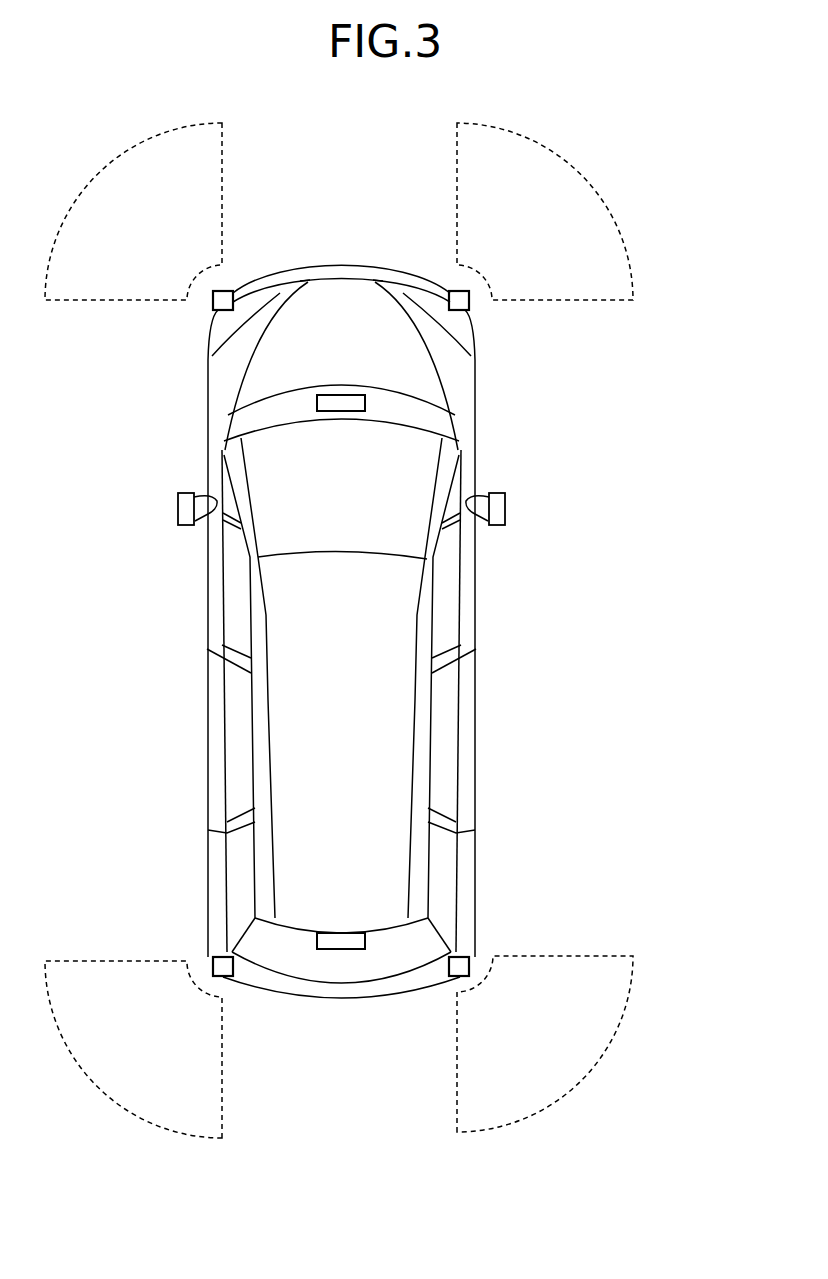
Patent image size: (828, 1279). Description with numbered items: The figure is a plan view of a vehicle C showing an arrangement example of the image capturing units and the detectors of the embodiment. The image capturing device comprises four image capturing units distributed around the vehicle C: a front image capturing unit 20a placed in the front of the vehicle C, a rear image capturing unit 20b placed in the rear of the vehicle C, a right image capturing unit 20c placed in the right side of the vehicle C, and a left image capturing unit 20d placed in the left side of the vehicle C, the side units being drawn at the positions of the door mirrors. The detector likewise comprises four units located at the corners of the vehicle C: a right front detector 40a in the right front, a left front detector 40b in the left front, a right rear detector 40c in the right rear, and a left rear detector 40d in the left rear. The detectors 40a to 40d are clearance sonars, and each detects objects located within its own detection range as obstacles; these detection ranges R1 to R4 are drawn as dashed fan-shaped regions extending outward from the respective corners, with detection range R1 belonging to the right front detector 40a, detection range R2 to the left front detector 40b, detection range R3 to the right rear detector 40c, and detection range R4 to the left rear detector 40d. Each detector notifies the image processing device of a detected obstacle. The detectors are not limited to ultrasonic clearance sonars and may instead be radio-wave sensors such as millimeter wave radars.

The vehicle C is at (478, 670).
The front image capturing unit 20a is at (365, 403).
The rear image capturing unit 20b is at (365, 940).
The right image capturing unit 20c is at (505, 506).
The left image capturing unit 20d is at (178, 506).
The right front detector 40a is at (469, 300).
The left front detector 40b is at (213, 300).
The right rear detector 40c is at (456, 955).
The left rear detector 40d is at (227, 955).
The detection range R1 is at (633, 283).
The detection range R2 is at (222, 131).
The detection range R3 is at (633, 962).
The detection range R4 is at (222, 1118).